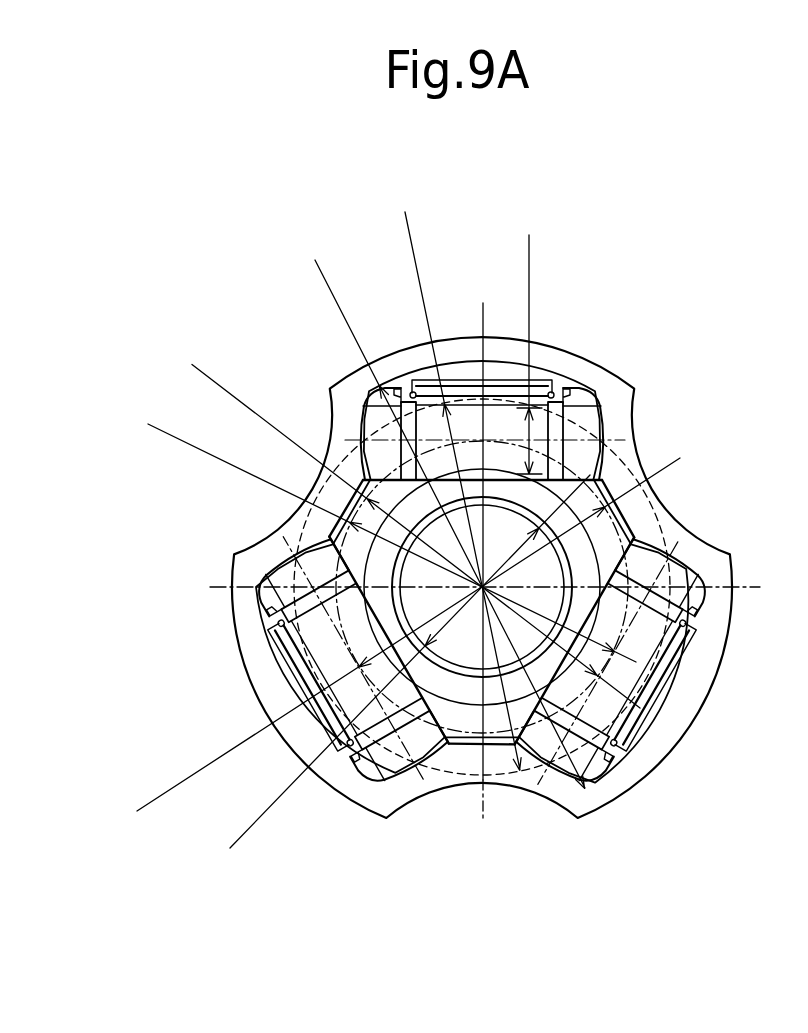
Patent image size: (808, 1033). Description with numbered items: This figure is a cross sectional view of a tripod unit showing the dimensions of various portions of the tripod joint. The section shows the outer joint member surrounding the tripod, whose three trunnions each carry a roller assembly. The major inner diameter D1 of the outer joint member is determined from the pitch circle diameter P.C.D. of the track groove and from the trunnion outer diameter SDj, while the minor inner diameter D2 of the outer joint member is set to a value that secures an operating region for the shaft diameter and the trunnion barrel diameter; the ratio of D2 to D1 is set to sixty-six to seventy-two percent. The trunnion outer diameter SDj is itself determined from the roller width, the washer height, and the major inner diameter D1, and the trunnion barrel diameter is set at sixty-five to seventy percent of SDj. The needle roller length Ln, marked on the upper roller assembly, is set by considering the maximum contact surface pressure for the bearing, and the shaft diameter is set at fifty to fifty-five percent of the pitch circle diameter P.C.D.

The major inner diameter of the outer joint member D1 is at (450, 522).
The trunnion outer diameter SDj is at (463, 491).
The needle roller length Ln is at (518, 354).
The minor inner diameter of the outer joint member D2 is at (392, 535).
The pitch circle diameter P.C.D. is at (404, 634).